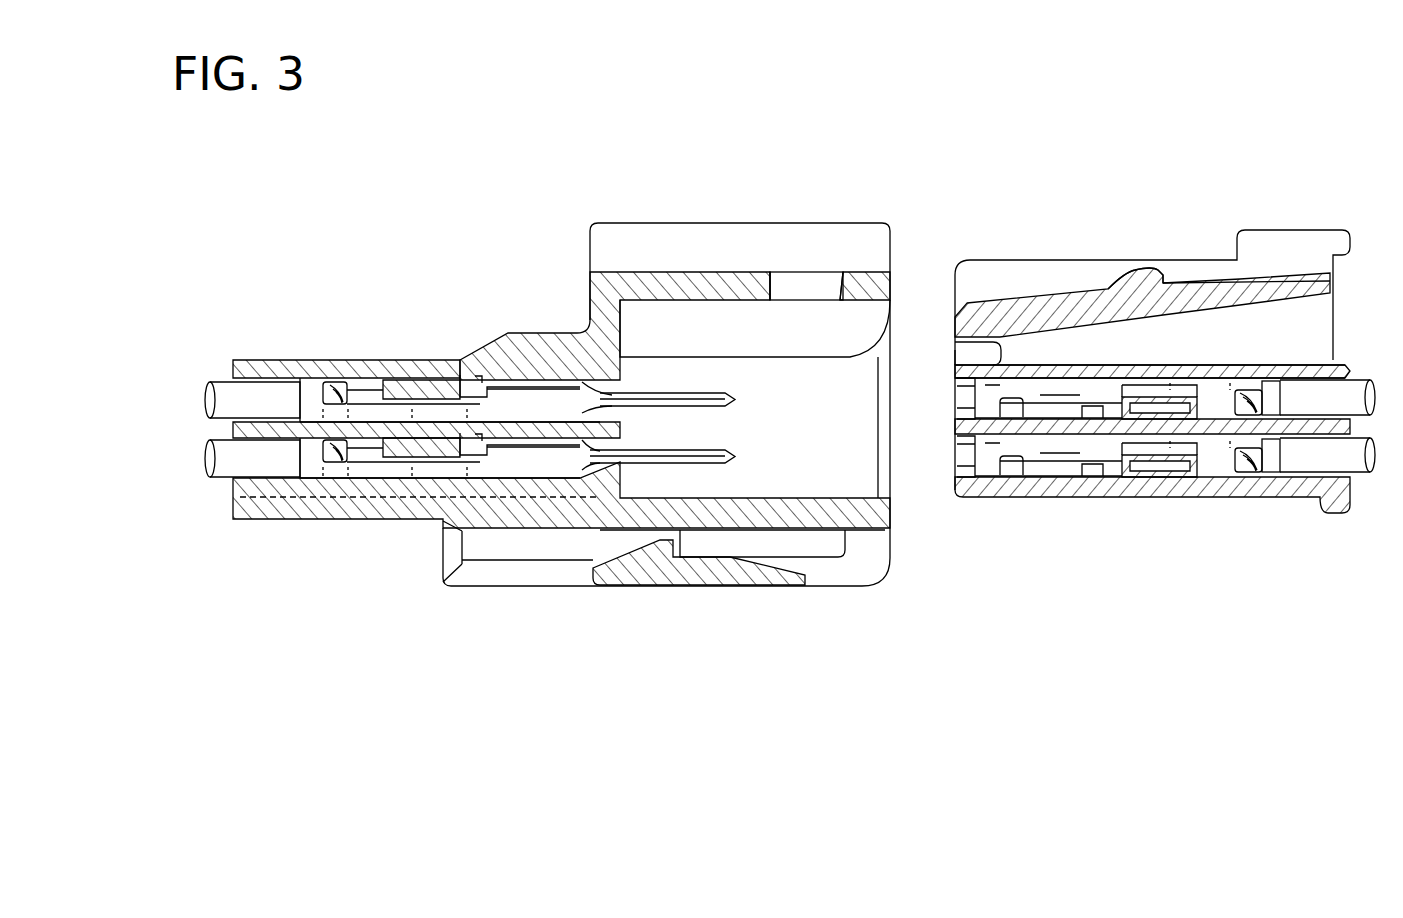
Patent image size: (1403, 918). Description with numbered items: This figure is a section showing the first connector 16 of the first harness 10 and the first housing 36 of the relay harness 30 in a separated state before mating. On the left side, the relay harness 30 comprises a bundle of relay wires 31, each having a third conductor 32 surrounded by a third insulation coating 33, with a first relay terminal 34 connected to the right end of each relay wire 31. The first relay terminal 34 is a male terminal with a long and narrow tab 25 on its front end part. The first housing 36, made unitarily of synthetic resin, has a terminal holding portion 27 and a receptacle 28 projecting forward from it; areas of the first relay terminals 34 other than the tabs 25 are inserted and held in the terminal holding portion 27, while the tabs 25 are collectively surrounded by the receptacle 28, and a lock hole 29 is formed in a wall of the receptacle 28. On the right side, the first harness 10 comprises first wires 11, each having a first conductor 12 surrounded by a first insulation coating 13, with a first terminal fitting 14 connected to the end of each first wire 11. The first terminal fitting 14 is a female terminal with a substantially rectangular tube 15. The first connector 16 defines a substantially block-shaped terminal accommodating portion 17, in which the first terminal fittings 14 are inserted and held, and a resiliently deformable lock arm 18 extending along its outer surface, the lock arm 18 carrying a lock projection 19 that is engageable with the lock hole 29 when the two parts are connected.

The first harness 10 is at (1037, 152).
The first wire 11 is at (1304, 490).
The first conductor 12 is at (1243, 458).
The first insulation coating 13 is at (1308, 462).
The first terminal fitting 14 is at (1183, 443).
The rectangular tube 15 is at (1060, 448).
The first connector 16 is at (1184, 219).
The terminal accommodating portion 17 is at (1192, 365).
The lock arm 18 is at (1065, 297).
The lock projection 19 is at (1140, 269).
The tab 25 is at (713, 463).
The terminal holding portion 27 is at (510, 512).
The receptacle 28 is at (690, 512).
The lock hole 29 is at (783, 272).
The relay harness 30 is at (497, 158).
The relay wire 31 is at (247, 578).
The third conductor 32 is at (340, 457).
The third insulation coating 33 is at (268, 457).
The first relay terminal 34 is at (435, 468).
The first housing 36 is at (600, 657).